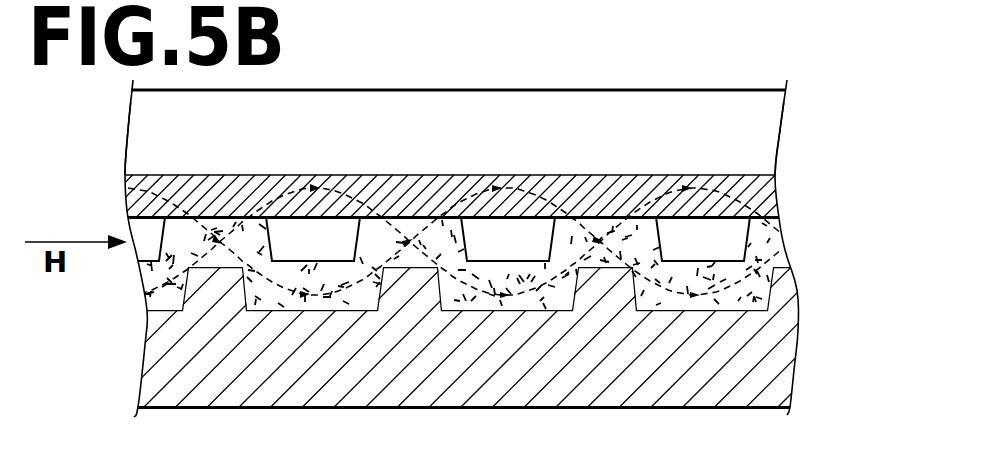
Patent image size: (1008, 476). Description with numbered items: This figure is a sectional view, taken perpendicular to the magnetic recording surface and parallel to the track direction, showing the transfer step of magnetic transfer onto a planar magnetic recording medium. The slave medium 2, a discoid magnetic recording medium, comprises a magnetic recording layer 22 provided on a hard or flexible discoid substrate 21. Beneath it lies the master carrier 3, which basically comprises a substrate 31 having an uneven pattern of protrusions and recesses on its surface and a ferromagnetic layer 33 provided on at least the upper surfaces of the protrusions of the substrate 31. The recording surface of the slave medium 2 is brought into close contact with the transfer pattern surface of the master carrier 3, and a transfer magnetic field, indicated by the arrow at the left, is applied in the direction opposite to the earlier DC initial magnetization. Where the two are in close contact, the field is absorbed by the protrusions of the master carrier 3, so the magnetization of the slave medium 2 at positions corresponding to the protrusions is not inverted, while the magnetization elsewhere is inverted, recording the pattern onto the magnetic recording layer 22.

The slave medium 2 is at (850, 77).
The discoid substrate 21 is at (768, 133).
The magnetic recording layer 22 is at (768, 209).
The master carrier 3 is at (873, 283).
The substrate 31 is at (783, 380).
The ferromagnetic layer 33 is at (780, 255).